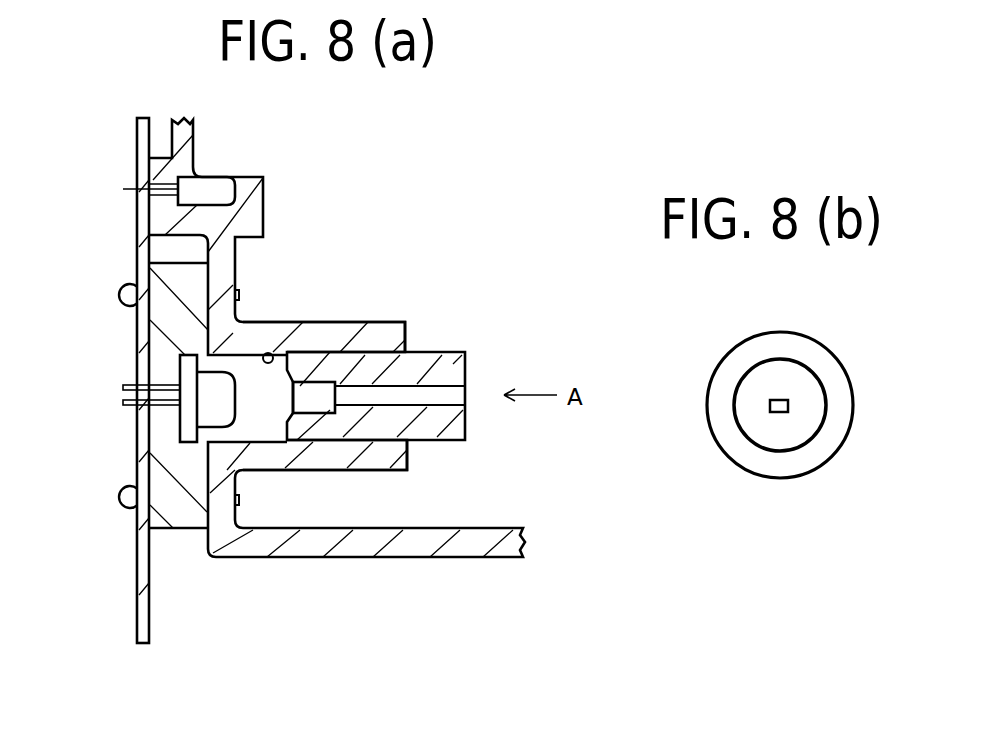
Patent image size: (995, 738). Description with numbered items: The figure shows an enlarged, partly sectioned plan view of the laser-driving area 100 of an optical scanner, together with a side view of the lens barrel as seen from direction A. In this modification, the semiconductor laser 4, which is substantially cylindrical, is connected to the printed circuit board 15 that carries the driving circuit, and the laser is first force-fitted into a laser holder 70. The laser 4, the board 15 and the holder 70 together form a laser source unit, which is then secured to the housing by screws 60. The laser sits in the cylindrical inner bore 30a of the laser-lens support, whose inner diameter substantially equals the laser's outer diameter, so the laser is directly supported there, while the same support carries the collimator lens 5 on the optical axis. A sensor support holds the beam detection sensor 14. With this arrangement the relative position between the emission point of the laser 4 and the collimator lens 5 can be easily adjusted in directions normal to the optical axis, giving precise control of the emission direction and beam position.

The laser-driving area 100 is at (442, 183).
The semiconductor laser 4 is at (187, 370).
The collimator lens 5 is at (313, 398).
The beam detection sensor 14 is at (213, 190).
The printed circuit board 15 is at (143, 558).
The cylindrical inner bore 30a is at (278, 356).
The screw 60 is at (120, 292).
The laser holder 70 is at (177, 513).